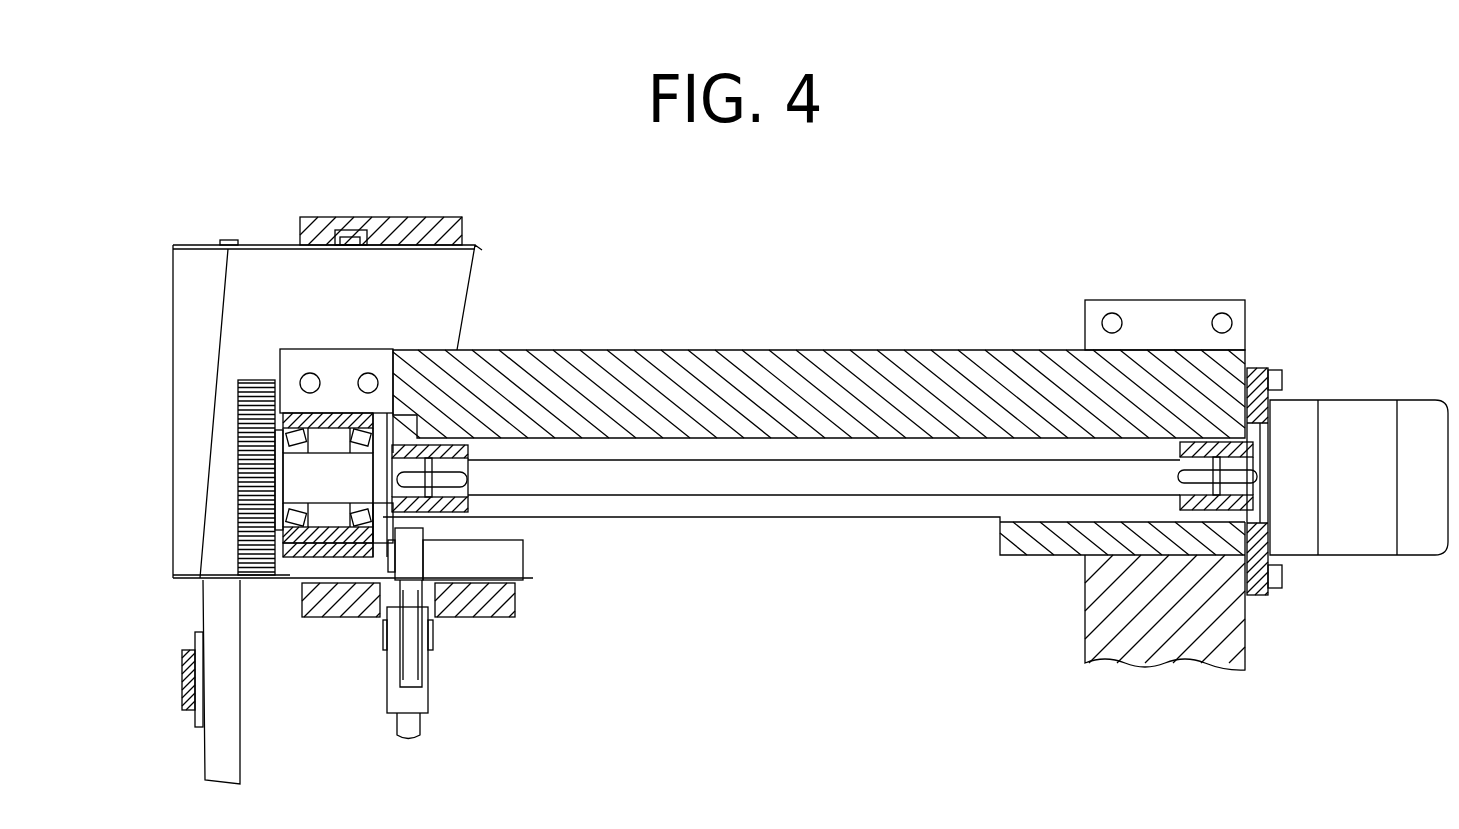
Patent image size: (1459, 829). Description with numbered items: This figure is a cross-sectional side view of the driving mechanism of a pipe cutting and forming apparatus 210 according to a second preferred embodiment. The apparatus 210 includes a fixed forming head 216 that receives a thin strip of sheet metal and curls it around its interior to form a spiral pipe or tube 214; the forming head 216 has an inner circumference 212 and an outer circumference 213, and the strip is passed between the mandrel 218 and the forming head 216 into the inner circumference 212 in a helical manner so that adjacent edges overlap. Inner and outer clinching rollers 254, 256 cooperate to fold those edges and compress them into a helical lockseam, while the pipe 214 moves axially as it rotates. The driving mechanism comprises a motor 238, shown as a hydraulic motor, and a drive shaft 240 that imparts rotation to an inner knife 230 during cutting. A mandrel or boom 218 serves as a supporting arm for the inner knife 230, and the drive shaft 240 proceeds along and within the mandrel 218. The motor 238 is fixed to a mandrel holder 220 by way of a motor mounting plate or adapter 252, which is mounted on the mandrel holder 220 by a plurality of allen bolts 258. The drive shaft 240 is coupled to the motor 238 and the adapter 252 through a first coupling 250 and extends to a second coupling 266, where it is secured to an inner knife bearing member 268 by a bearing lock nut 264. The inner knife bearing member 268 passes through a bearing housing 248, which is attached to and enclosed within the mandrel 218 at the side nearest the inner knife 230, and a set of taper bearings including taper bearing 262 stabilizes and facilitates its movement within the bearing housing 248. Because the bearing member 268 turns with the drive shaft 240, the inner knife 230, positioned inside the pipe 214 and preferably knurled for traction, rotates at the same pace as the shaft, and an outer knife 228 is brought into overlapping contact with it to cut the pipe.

The apparatus 210 is at (878, 219).
The inner circumference 212 is at (306, 255).
The outer circumference 213 is at (340, 205).
The spiral pipe or tube 214 is at (188, 262).
The forming head 216 is at (407, 227).
The mandrel or boom 218 is at (867, 378).
The mandrel holder 220 is at (1112, 628).
The outer knife 228 is at (230, 763).
The inner knife 230 is at (245, 422).
The motor 238 is at (1360, 418).
The drive shaft 240 is at (870, 483).
The bearing housing 248 is at (330, 540).
The first coupling 250 is at (1188, 452).
The motor mounting plate or adapter 252 is at (1255, 572).
The inner clinching roller 254 is at (413, 553).
The outer clinching roller 256 is at (410, 670).
The allen bolts 258 is at (1280, 378).
The taper bearing 262 is at (307, 535).
The bearing lock nut 264 is at (400, 440).
The second coupling 266 is at (467, 453).
The inner knife bearing member 268 is at (327, 465).